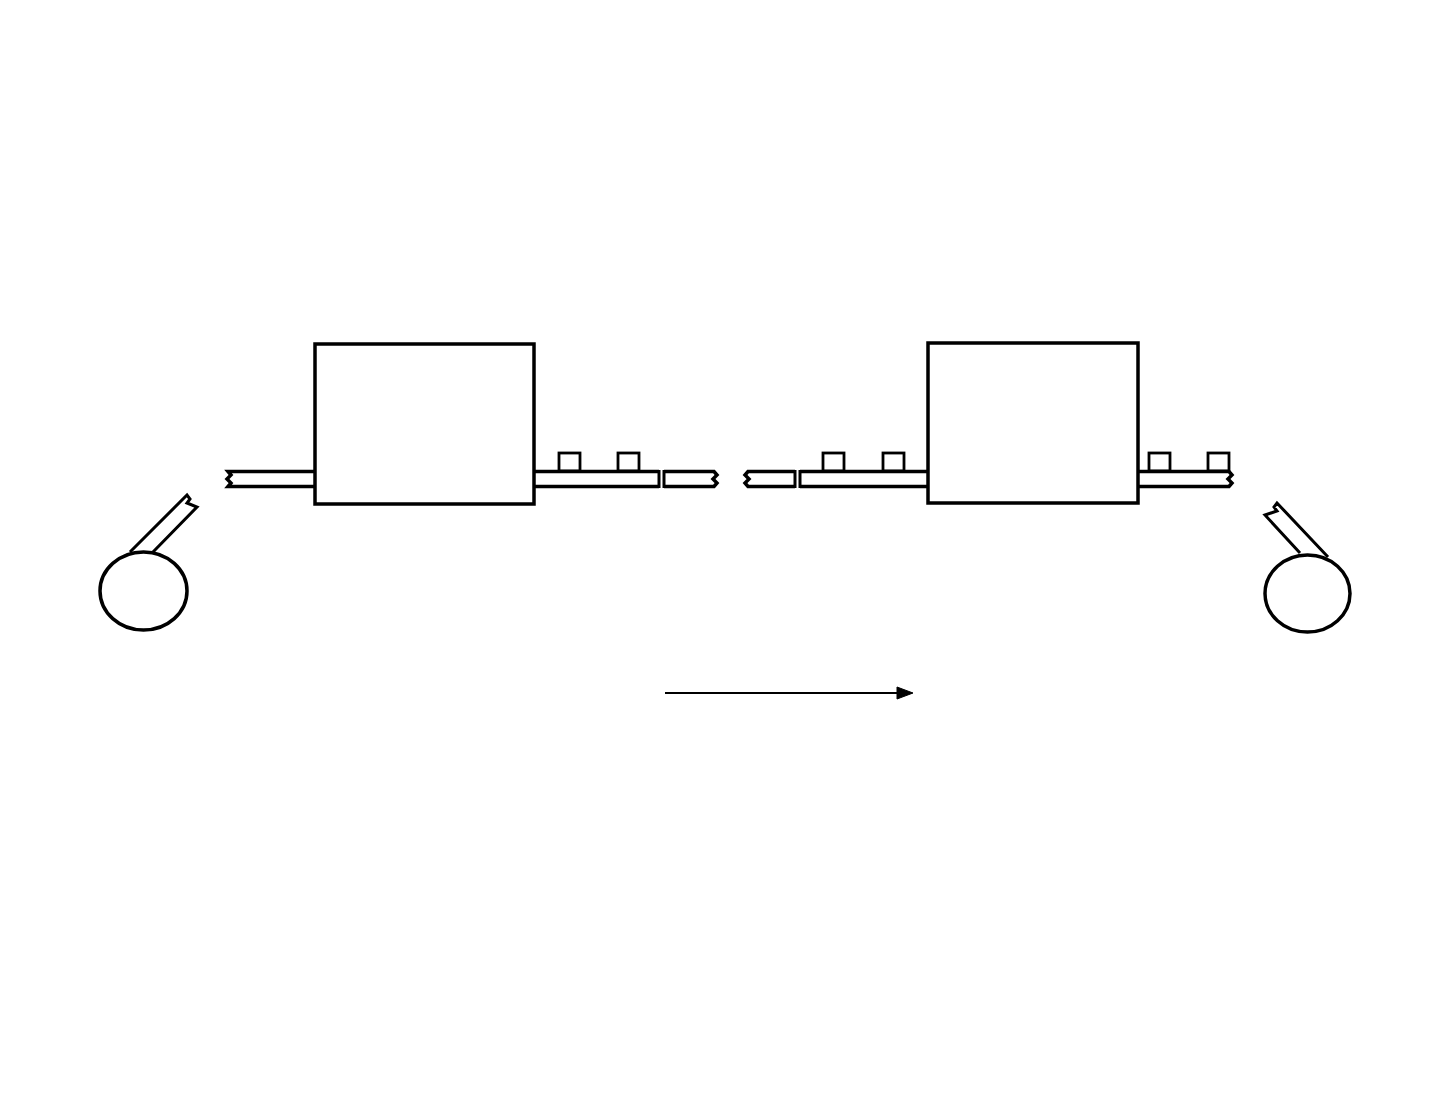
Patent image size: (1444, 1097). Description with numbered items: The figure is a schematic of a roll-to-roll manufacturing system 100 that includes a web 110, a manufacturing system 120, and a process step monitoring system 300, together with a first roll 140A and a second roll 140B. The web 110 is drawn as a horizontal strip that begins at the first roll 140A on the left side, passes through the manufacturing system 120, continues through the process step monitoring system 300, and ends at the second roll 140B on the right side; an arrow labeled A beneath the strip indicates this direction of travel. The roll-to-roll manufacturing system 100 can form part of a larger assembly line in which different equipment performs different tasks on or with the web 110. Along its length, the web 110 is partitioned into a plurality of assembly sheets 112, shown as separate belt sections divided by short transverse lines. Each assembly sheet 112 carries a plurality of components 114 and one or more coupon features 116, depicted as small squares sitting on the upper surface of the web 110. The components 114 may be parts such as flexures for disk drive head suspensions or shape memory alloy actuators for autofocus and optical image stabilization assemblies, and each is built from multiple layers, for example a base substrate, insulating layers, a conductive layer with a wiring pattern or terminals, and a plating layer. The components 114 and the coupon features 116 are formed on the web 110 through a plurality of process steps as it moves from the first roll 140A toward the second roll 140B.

The roll-to-roll manufacturing system 100 is at (354, 160).
The web 110 is at (226, 430).
The assembly sheets 112 is at (598, 481).
The components 114 is at (570, 453).
The coupon features 116 is at (633, 453).
The manufacturing system 120 is at (387, 344).
The process step monitoring system 300 is at (1033, 343).
The first roll 140A is at (183, 605).
The second roll 140B is at (1347, 615).